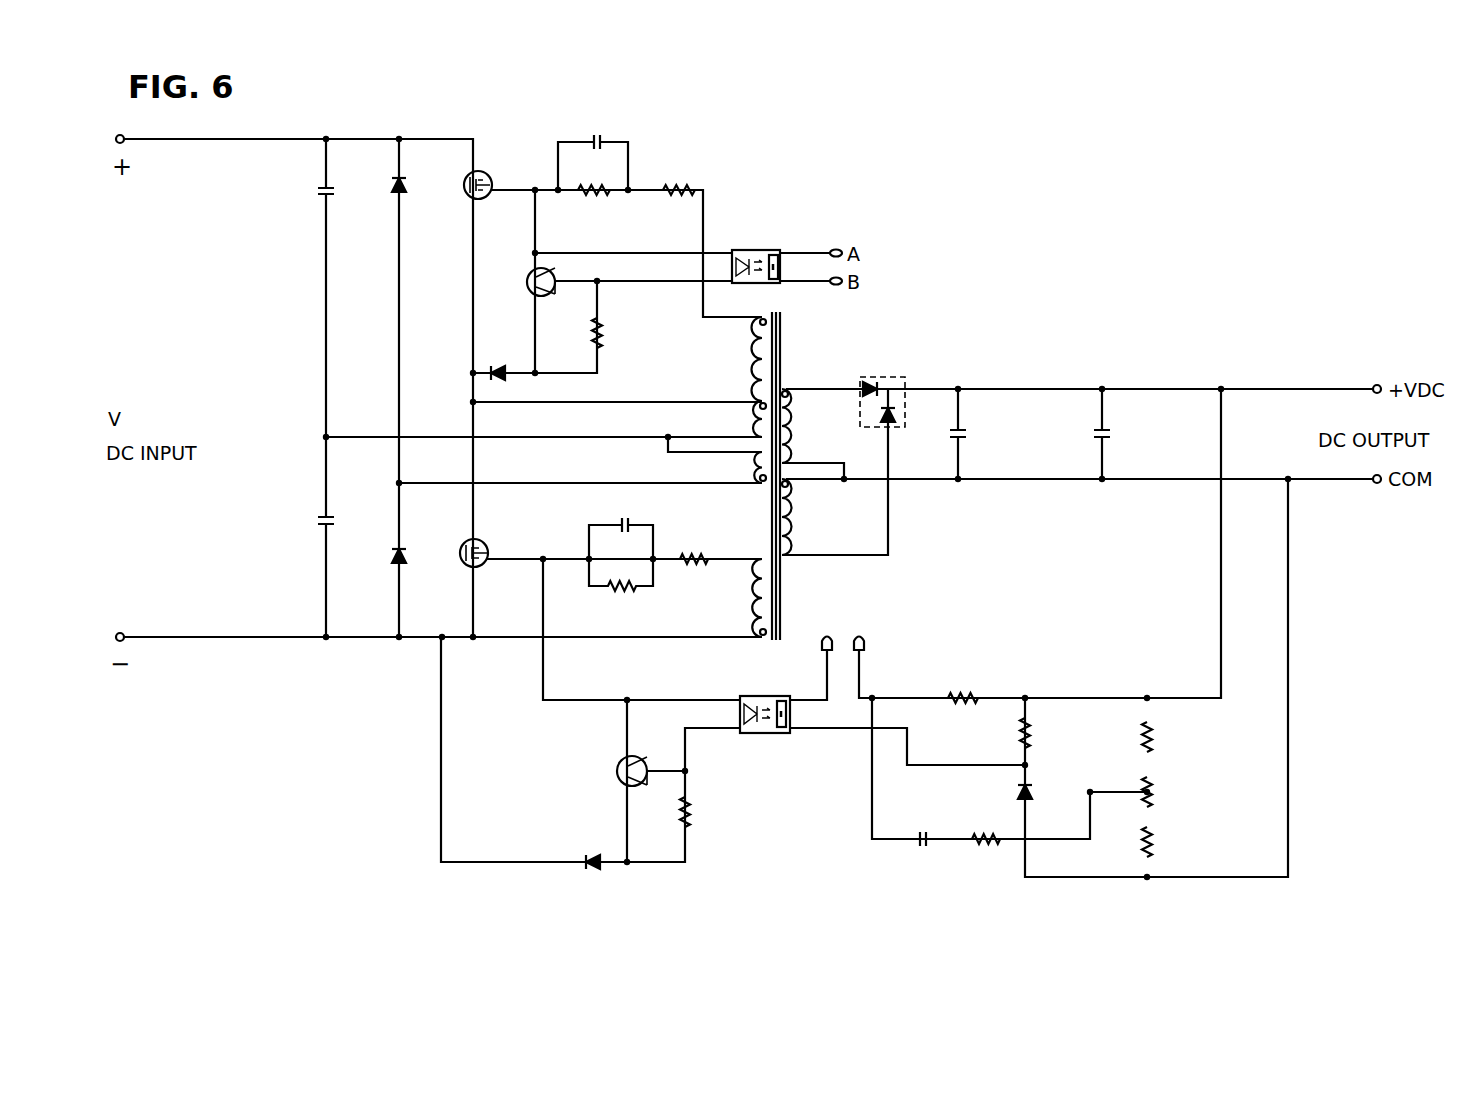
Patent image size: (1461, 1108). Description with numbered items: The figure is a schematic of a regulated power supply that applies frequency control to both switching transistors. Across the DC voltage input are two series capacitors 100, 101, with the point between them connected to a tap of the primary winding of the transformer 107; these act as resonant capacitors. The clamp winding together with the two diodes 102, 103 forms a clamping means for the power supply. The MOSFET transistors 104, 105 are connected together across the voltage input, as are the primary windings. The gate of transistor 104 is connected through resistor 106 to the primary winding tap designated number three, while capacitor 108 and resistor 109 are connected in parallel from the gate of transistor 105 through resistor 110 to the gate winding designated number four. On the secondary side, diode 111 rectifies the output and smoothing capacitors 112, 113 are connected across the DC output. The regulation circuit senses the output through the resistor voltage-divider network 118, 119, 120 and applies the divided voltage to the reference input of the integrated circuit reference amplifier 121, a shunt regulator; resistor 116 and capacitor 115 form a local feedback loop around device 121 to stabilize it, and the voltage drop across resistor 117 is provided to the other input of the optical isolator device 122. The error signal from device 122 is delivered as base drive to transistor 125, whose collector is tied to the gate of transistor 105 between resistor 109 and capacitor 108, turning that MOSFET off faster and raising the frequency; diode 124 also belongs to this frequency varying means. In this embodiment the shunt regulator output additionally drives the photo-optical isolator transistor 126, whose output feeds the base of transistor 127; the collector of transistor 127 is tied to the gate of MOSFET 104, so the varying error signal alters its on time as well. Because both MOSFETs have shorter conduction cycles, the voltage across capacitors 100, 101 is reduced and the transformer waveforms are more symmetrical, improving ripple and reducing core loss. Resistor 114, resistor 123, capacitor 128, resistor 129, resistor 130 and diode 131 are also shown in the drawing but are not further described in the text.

The capacitor 100 is at (315, 203).
The capacitor 101 is at (312, 527).
The diode 102 is at (404, 198).
The diode 103 is at (386, 553).
The MOSFET transistor 104 is at (486, 170).
The MOSFET transistor 105 is at (482, 540).
The resistor 106 is at (688, 180).
The transformer 107 is at (786, 348).
The capacitor 108 is at (636, 528).
The resistor 109 is at (621, 587).
The resistor 110 is at (701, 562).
The diode 111 is at (900, 374).
The smoothing capacitor 112 is at (968, 440).
The smoothing capacitor 113 is at (1112, 440).
The resistor R10 114 is at (976, 667).
The capacitor 115 is at (918, 844).
The resistor 116 is at (980, 848).
The resistor 117 is at (1017, 741).
The resistor 118 is at (1157, 748).
The resistor 119 is at (1158, 805).
The resistor 120 is at (1158, 850).
The integrated circuit reference amplifier 121 is at (1014, 790).
The optical isolator device 122 is at (784, 736).
The resistor R8 123 is at (696, 822).
The diode 124 is at (600, 873).
The transistor 125 is at (614, 770).
The photo-optical isolator transistor 126 is at (766, 231).
The transistor 127 is at (522, 280).
The capacitor C1 128 is at (608, 128).
The resistor R2 129 is at (604, 198).
The resistor R1 130 is at (604, 344).
The diode CR3 131 is at (500, 344).